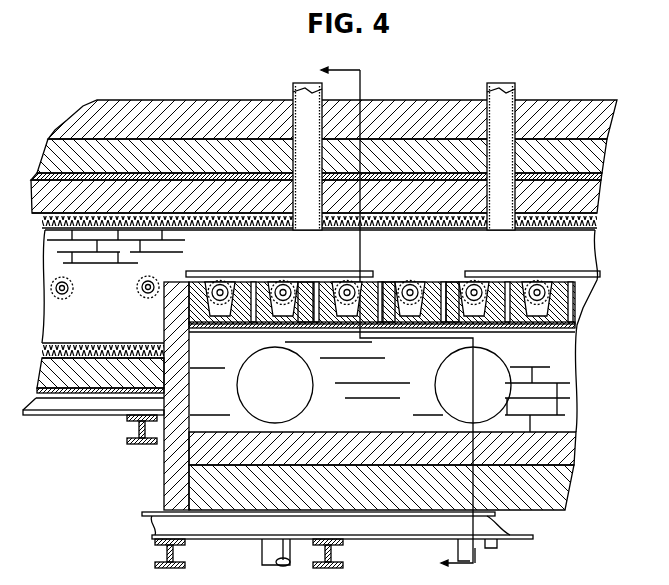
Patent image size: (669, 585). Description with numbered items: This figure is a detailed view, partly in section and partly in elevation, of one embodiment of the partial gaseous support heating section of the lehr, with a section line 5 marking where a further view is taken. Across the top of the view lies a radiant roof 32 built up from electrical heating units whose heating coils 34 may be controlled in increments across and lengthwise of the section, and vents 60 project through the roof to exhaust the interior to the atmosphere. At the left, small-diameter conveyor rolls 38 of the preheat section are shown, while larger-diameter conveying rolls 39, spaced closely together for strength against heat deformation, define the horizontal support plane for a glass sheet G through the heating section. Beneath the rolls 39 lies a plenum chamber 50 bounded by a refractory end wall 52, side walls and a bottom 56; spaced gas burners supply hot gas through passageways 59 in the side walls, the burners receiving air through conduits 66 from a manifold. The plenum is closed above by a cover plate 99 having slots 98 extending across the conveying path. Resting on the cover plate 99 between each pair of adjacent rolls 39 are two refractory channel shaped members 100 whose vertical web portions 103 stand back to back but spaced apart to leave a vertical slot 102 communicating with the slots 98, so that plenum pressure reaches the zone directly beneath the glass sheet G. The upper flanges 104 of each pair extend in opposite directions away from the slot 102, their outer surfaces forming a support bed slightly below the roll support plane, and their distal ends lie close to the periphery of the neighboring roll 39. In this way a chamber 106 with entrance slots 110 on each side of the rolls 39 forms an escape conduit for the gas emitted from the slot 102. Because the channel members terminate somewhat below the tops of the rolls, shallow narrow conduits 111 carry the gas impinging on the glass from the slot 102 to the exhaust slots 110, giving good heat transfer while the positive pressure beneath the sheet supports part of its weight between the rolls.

The section line 5- 5 is at (391, 318).
The radiant roof 32 is at (240, 233).
The heating coils 34 is at (533, 227).
The conveyor rolls 38 is at (138, 292).
The conveying rolls 39 is at (344, 281).
The plenum chamber 50 is at (580, 367).
The refractory end wall 52 is at (189, 410).
The bottom 56 is at (353, 432).
The passageways 59 is at (374, 385).
The vents 60 is at (522, 86).
The conduits 66 is at (262, 551).
The slots 98 is at (248, 328).
The plenum chamber cover plate 99 is at (222, 328).
The channel shaped members 100 is at (431, 284).
The vertical slot 102 is at (379, 284).
The vertical web portions 103 is at (331, 283).
The upper flanges 104 is at (457, 290).
The chamber 106 is at (478, 312).
The entrance slots 110 is at (421, 280).
The conduits 111 is at (306, 285).
The glass sheet G is at (283, 268).